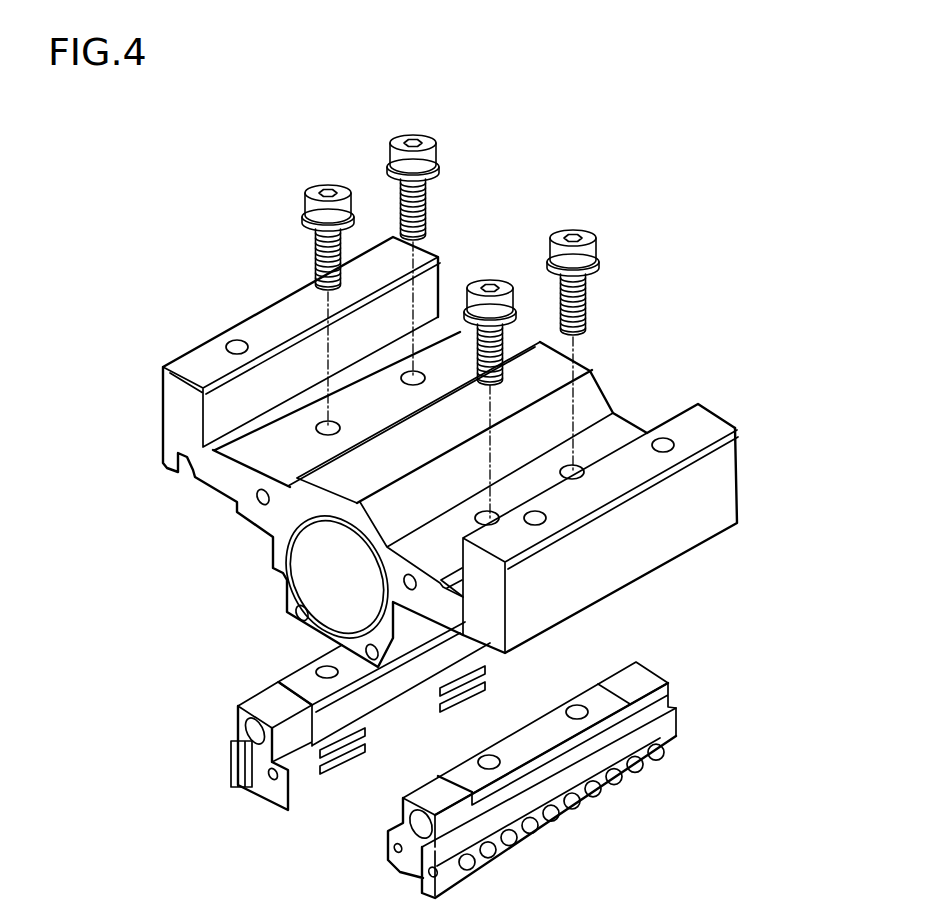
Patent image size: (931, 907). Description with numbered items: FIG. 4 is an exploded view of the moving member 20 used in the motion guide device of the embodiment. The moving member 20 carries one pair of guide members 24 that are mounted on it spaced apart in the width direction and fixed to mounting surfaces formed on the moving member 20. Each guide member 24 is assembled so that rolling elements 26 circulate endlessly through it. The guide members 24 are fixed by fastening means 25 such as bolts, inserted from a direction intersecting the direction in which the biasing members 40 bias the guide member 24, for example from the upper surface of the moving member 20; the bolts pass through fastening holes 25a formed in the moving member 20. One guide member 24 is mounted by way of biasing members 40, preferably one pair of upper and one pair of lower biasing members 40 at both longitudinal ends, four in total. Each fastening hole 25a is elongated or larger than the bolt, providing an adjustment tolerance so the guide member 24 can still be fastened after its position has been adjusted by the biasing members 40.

The moving member 20 is at (769, 328).
The guide member 24 is at (262, 705).
The fastening means 25 is at (600, 249).
The fastening hole 25a is at (417, 372).
The rolling element 26 is at (548, 824).
The biasing member 40 is at (463, 680).